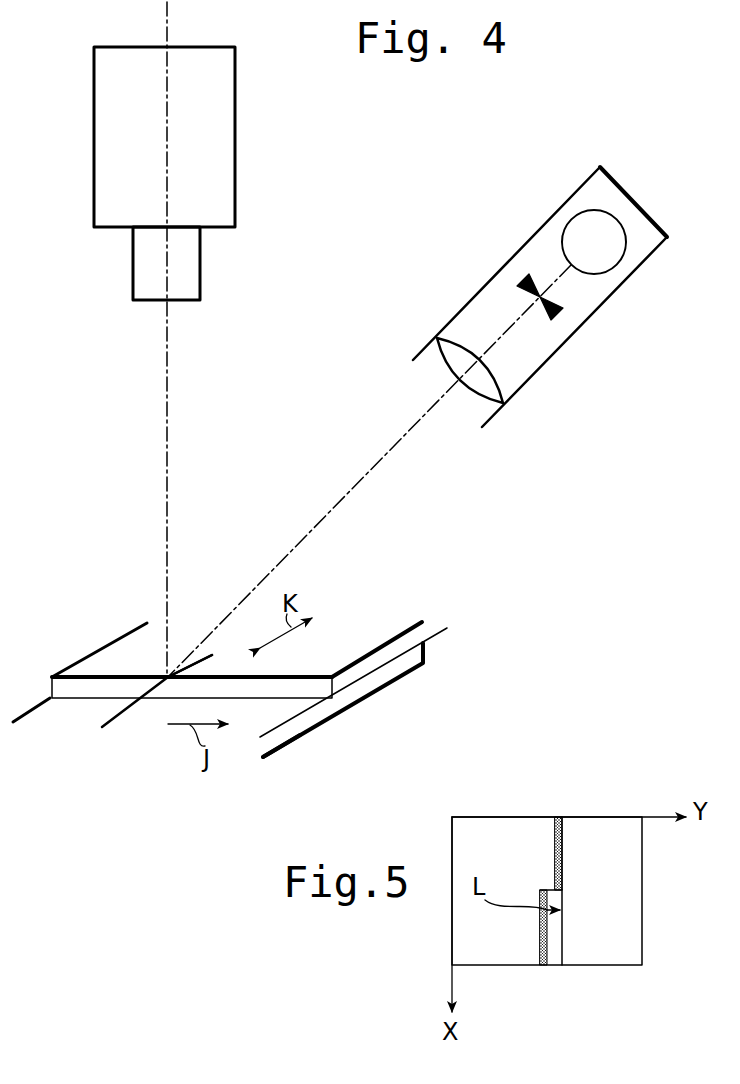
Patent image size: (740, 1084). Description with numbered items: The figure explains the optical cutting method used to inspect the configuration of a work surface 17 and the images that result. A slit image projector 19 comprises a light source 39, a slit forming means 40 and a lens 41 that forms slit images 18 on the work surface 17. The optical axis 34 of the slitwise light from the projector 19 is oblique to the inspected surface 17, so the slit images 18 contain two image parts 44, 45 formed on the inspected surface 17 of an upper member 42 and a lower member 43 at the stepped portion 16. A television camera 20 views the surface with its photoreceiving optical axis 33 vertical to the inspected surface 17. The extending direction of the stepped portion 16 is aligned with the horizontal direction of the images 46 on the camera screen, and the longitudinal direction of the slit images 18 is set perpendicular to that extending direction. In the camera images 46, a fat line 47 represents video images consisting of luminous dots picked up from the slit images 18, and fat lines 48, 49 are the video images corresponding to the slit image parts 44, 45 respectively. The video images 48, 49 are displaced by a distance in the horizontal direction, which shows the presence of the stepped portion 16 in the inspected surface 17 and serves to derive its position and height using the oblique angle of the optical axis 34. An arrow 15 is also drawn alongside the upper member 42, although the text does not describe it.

In FIG. 4, the television camera 20 is at (236, 113).
In FIG. 4, the photoreceiving optical axis 33 is at (167, 368).
In FIG. 4, the optical axis 34 is at (387, 457).
In FIG. 4, the slit image projector 19 is at (527, 240).
In FIG. 4, the light source 39 is at (604, 214).
In FIG. 4, the slit forming means 40 is at (523, 278).
In FIG. 4, the lens 41 is at (463, 352).
In FIG. 4, the stepped portion 16 is at (163, 716).
In FIG. 4, the image part 45 is at (115, 712).
In FIG. 4, the slit images 18 is at (215, 660).
In FIG. 4, the image part 44 is at (197, 658).
In FIG. 4, the upper member 42 is at (397, 613).
In FIG. 4, the work surface 17 is at (378, 634).
In FIG. 4, the lower member 43 is at (268, 712).
In FIG. 4, the feed direction arrow 15 is at (407, 685).
In FIG. 5, the images 46 is at (573, 977).
In FIG. 5, the fat line 47 is at (563, 853).
In FIG. 5, the fat line 48 is at (554, 848).
In FIG. 5, the fat line 49 is at (540, 942).